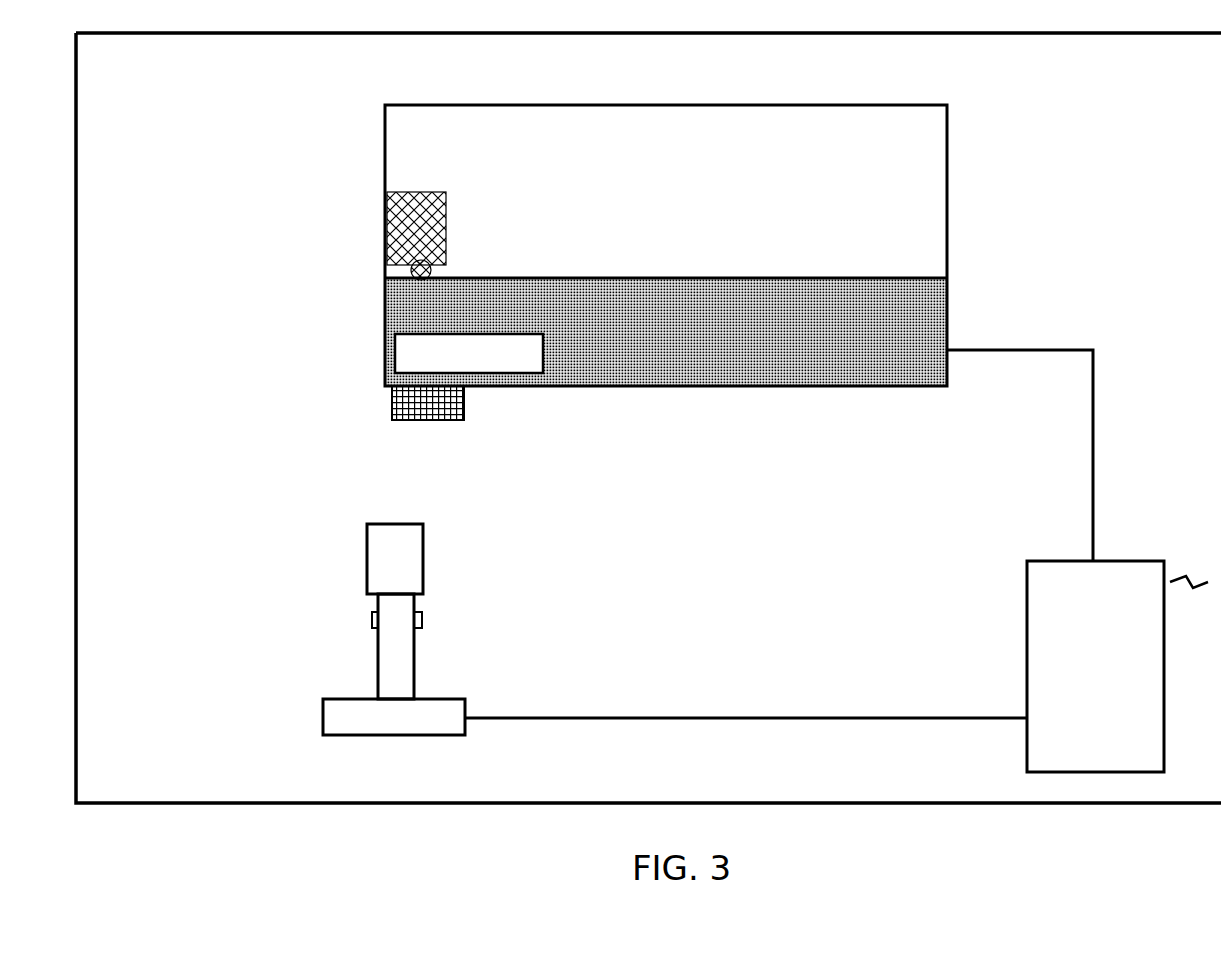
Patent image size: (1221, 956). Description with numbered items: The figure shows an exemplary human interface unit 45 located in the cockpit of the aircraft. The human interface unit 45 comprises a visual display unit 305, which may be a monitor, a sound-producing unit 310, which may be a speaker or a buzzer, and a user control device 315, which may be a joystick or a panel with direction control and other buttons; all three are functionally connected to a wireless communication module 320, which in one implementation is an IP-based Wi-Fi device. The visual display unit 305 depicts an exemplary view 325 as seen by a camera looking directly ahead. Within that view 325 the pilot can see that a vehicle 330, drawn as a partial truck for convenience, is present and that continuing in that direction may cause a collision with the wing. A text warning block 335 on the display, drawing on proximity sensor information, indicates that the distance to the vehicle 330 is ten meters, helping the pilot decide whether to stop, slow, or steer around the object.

The human interface unit 45 is at (648, 418).
The visual display unit 305 is at (457, 105).
The sound-producing unit 310 is at (431, 420).
The user control device 315 is at (372, 702).
The wireless communication module 320 is at (1125, 559).
The view 325 is at (666, 191).
The vehicle 330 is at (447, 228).
The text warning block 335 is at (533, 333).